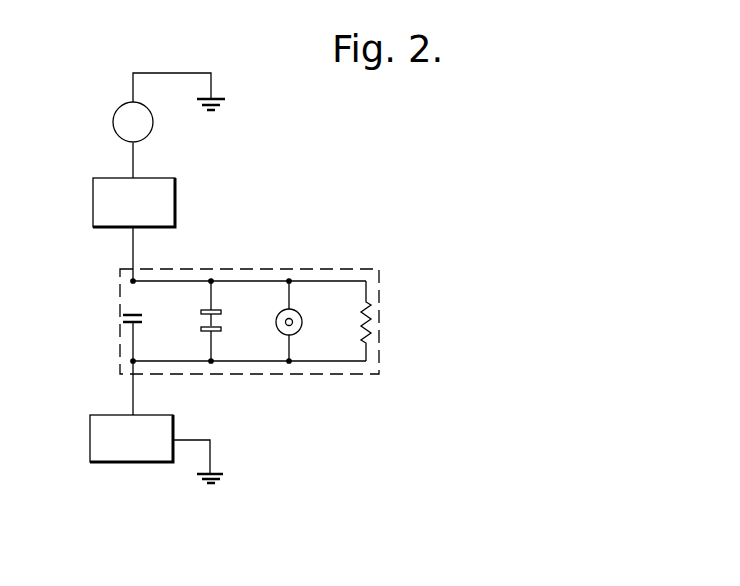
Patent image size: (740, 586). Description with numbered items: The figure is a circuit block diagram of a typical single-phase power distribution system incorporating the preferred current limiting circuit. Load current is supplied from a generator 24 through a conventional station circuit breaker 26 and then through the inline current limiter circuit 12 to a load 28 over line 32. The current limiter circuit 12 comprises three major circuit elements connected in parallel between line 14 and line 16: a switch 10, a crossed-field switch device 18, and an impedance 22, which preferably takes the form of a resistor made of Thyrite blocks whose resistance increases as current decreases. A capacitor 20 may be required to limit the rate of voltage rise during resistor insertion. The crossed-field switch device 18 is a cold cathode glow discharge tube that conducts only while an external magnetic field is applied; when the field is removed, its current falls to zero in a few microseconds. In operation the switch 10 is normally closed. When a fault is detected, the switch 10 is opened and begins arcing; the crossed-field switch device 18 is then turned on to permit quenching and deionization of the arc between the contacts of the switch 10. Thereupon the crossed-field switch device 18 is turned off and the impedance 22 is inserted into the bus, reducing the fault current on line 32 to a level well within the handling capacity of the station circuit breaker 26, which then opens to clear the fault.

The generator 24 is at (114, 112).
The station circuit breaker 26 is at (168, 187).
The current limiter circuit 12 is at (381, 292).
The line 14 is at (238, 283).
The line 16 is at (222, 362).
The capacitor 20 is at (136, 314).
The switch 10 is at (215, 330).
The crossed-field switch device 18 is at (298, 312).
The impedance 22 is at (360, 327).
The line 32 is at (133, 398).
The load 28 is at (93, 455).